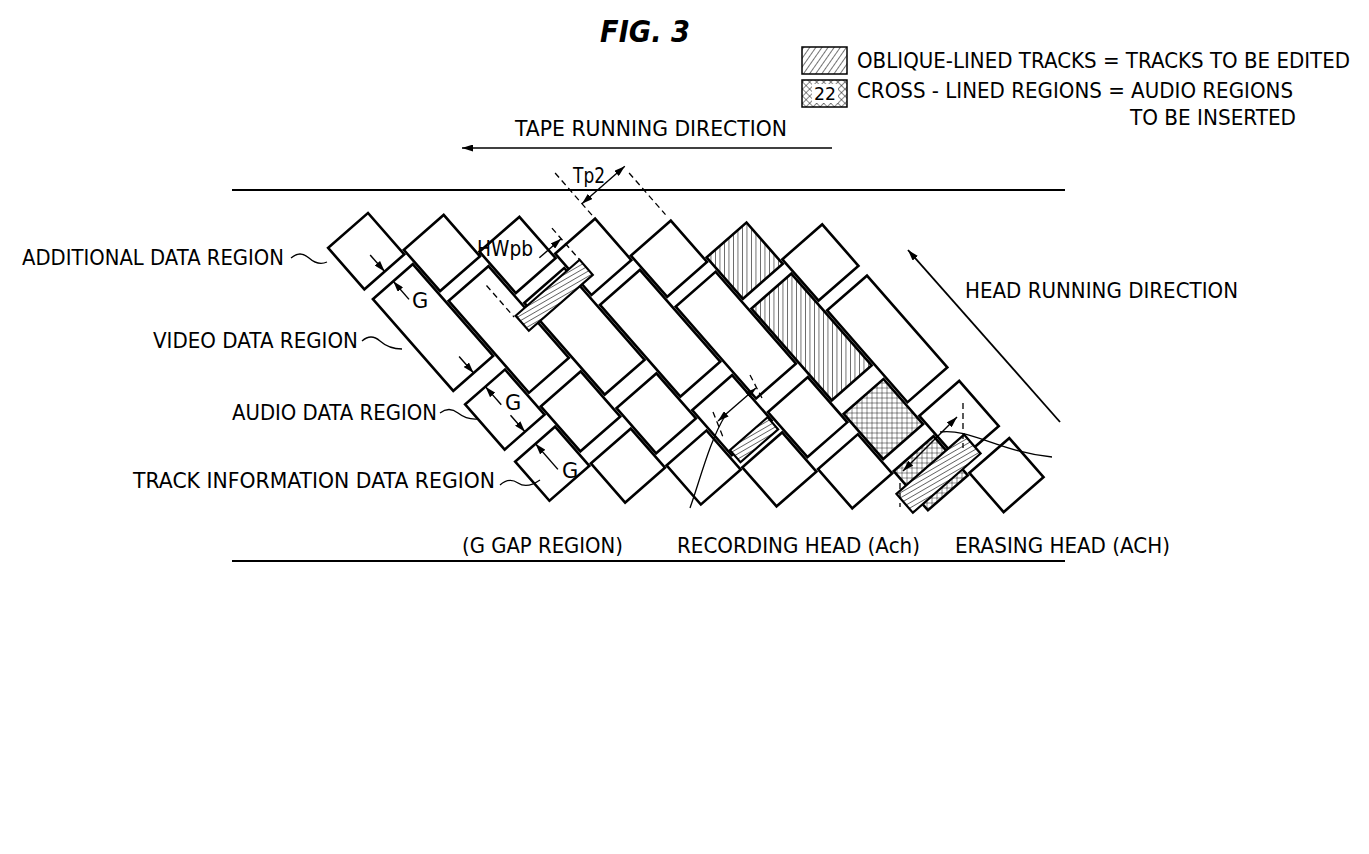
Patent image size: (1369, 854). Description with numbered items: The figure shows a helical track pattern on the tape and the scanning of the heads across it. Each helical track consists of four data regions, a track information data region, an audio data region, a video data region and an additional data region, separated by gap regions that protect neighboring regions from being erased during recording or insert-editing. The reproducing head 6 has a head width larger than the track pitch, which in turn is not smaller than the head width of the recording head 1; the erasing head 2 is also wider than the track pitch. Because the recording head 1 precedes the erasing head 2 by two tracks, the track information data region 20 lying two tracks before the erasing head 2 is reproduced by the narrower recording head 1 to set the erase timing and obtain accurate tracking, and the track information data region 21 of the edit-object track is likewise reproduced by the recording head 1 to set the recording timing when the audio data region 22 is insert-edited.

The recording head 1 is at (745, 462).
The erasing head 2 is at (933, 494).
The reproducing head 6 is at (582, 262).
The track information data region 20 is at (779, 469).
The track information data region 21 is at (931, 473).
The audio data region 22 is at (883, 419).